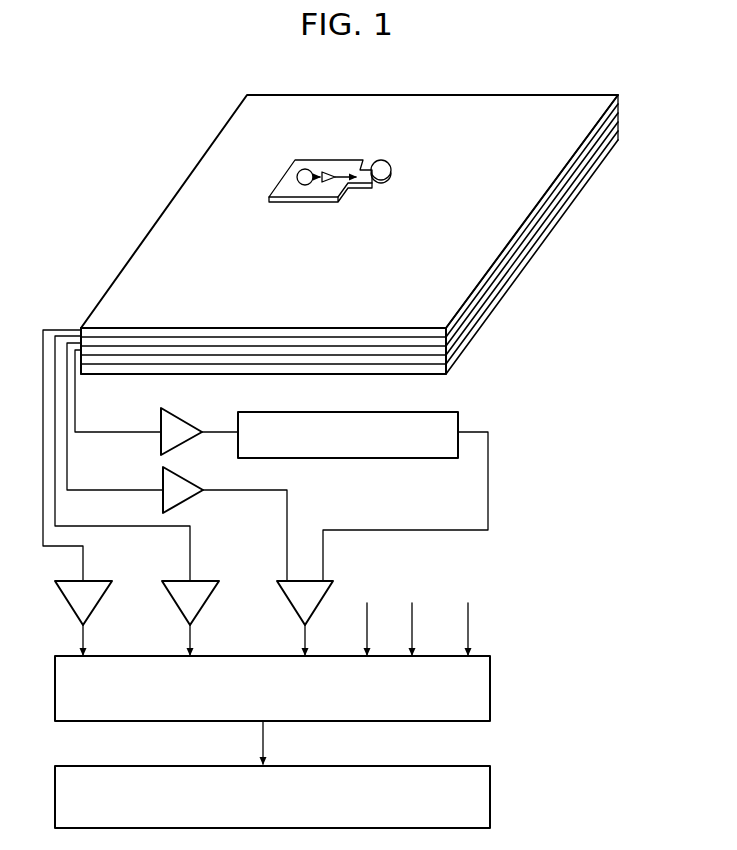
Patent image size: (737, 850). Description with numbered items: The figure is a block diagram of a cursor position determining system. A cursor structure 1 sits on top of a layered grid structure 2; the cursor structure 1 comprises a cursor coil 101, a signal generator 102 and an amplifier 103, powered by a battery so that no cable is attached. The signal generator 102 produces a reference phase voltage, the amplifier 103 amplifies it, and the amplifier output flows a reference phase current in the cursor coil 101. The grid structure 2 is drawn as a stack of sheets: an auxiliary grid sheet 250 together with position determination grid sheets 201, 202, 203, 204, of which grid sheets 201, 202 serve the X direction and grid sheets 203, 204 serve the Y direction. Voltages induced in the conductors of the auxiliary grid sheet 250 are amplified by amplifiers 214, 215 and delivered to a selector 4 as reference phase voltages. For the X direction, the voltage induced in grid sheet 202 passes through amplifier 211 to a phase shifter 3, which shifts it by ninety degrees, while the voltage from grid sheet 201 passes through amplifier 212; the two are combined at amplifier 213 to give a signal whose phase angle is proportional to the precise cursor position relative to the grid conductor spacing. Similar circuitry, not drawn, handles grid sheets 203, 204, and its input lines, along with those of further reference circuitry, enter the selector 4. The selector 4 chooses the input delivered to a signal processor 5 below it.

The cursor structure 1 is at (367, 175).
The grid structure 2 is at (392, 210).
The auxiliary grid sheet 250 is at (618, 98).
The grid sheet 201 is at (618, 108).
The grid sheet 202 is at (617, 117).
The grid sheet 203 is at (616, 126).
The grid sheet 204 is at (376, 254).
The cursor coil 101 is at (392, 171).
The signal generator 102 is at (307, 169).
The amplifier 103 is at (326, 184).
The phase shifter 3 is at (443, 412).
The selector 4 is at (490, 687).
The signal processor 5 is at (490, 797).
The amplifier 211 is at (187, 414).
The amplifier 212 is at (188, 478).
The amplifier 213 is at (290, 605).
The amplifier 214 is at (70, 605).
The amplifier 215 is at (178, 605).